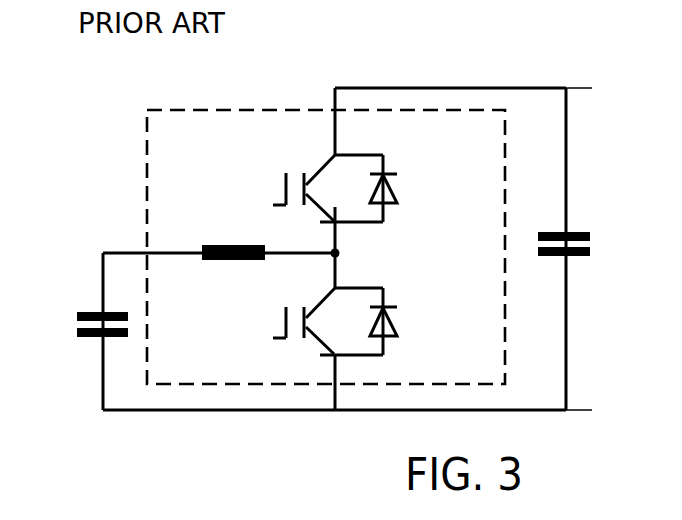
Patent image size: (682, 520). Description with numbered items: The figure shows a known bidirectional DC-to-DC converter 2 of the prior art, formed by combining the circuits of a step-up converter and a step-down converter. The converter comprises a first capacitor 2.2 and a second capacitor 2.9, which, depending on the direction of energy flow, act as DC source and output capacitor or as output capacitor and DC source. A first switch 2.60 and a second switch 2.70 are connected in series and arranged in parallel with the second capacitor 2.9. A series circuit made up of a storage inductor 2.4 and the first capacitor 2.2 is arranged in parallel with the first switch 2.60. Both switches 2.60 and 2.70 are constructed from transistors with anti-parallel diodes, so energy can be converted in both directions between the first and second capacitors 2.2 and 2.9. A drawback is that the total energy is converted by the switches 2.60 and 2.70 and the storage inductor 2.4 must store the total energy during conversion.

The half-bridge power module (prior art) 2 is at (293, 216).
The first capacitor 2.2 is at (72, 345).
The storage inductor 2.4 is at (213, 222).
The first switch 2.60 is at (428, 305).
The second switch 2.70 is at (428, 172).
The second capacitor 2.9 is at (604, 205).